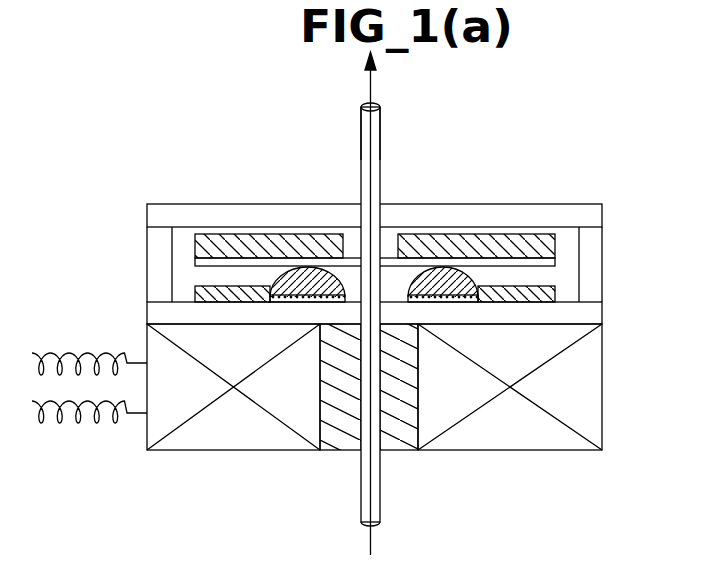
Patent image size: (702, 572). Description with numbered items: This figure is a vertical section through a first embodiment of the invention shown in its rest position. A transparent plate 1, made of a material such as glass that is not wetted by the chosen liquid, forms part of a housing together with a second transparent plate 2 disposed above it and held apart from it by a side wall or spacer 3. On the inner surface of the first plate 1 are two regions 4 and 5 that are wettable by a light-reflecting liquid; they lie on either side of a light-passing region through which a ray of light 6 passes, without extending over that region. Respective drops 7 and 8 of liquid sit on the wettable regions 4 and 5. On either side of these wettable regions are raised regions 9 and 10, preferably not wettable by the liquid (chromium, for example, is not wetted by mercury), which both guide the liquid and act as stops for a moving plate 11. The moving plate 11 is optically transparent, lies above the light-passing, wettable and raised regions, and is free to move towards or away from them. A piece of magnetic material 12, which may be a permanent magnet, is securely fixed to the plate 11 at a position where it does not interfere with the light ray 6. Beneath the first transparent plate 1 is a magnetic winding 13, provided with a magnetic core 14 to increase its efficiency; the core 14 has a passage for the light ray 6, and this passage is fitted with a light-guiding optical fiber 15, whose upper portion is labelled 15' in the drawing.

The transparent plate 1 is at (160, 313).
The second transparent plate 2 is at (185, 217).
The side wall or spacer 3 is at (158, 256).
The wettable region 4 is at (283, 303).
The wettable region 5 is at (463, 300).
The ray of light 6 is at (372, 536).
The drop of liquid 7 is at (334, 276).
The drop of liquid 8 is at (412, 281).
The raised region 9 is at (223, 303).
The raised region 10 is at (523, 293).
The moving plate 11 is at (530, 265).
The piece of magnetic material 12 is at (508, 248).
The magnetic winding 13 is at (585, 392).
The magnetic core 14 is at (398, 445).
The light-guiding optical fiber 15 is at (339, 314).
The shaft upper end 15' is at (339, 133).